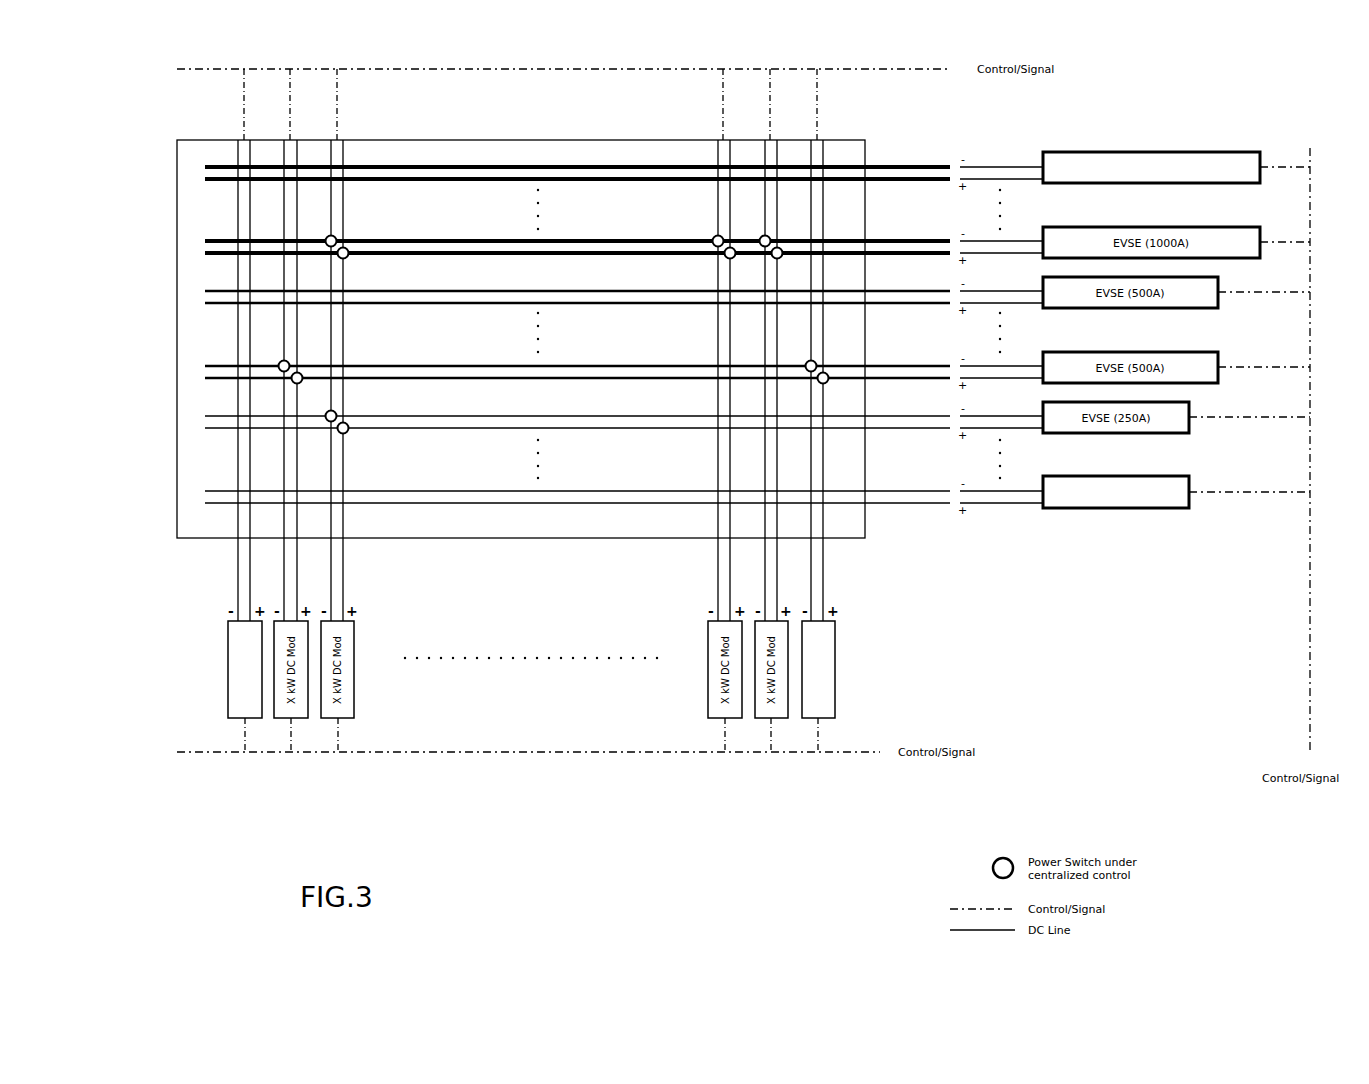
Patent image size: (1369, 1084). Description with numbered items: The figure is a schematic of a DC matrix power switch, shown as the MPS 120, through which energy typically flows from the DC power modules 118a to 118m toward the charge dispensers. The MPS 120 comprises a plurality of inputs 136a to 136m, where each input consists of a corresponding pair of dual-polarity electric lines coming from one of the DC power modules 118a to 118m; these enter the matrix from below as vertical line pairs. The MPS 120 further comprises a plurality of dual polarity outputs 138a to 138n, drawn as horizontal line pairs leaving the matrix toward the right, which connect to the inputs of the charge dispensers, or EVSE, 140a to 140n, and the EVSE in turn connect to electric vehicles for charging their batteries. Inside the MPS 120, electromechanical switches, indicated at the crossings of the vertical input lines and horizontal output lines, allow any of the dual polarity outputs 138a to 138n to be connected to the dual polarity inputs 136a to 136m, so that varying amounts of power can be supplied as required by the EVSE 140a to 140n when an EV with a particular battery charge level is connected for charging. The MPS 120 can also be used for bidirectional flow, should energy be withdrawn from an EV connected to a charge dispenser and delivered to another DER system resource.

The MPS 120 is at (166, 285).
The input 136a is at (238, 575).
The input 136m is at (824, 570).
The DC power module 118a is at (228, 670).
The DC power module 118m is at (835, 668).
The dual polarity output 138a is at (922, 160).
The dual polarity output 138n is at (907, 506).
The charge dispenser (EVSE) 140a is at (1150, 151).
The charge dispenser (EVSE) 140n is at (1115, 509).